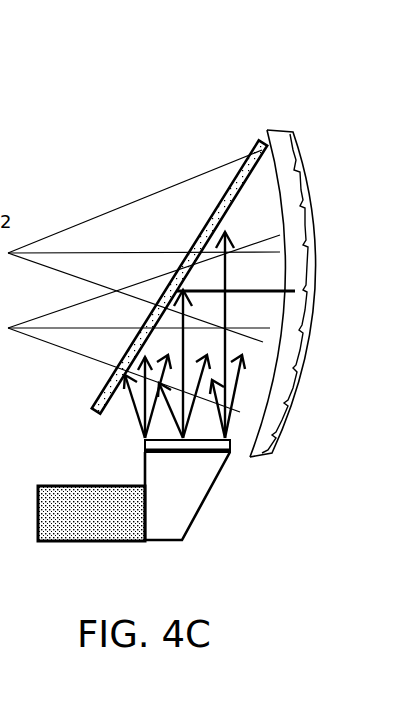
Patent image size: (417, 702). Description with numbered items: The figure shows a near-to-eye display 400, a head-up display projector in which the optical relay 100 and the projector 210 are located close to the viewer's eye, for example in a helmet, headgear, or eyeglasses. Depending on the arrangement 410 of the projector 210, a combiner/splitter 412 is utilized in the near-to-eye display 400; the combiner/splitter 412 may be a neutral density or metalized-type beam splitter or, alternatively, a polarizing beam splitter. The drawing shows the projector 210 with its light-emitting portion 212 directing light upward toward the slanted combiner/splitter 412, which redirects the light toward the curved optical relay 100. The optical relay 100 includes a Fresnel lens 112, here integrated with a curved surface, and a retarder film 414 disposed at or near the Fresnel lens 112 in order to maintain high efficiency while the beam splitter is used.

The near-to-eye display 400 is at (253, 107).
The combiner/splitter 412 is at (184, 244).
The retarder film 414 is at (288, 255).
The optical relay 100 is at (275, 440).
The Fresnel lens 112 is at (297, 382).
The light emitter 212 is at (232, 450).
The arrangement 410 is at (197, 513).
The projector 210 is at (53, 487).